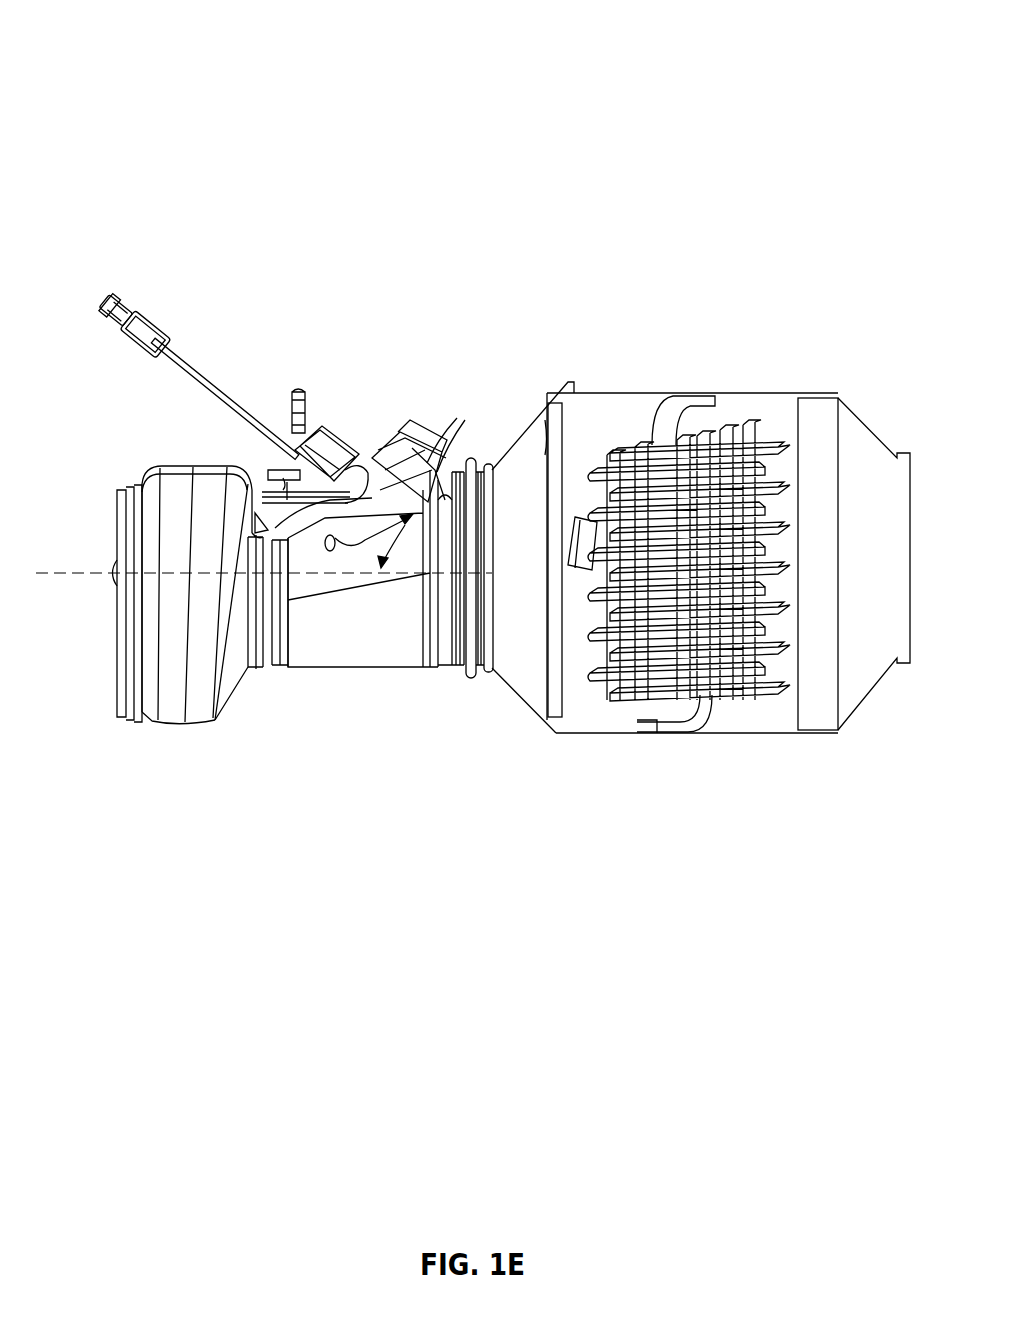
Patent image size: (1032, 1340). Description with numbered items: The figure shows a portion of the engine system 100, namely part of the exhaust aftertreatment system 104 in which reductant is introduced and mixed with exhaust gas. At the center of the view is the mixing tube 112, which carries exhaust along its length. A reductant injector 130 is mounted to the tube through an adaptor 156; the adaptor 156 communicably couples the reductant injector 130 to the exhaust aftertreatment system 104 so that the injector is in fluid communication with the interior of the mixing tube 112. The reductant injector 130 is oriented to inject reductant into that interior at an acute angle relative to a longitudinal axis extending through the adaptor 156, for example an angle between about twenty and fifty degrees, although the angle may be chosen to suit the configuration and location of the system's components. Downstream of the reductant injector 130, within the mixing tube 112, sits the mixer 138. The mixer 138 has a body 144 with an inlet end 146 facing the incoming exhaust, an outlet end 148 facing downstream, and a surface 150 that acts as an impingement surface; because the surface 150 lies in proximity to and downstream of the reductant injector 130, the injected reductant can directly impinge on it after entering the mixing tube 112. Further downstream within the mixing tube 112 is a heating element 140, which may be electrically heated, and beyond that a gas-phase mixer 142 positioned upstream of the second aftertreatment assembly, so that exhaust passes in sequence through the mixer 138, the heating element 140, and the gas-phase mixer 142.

The engine system 100 is at (730, 73).
The exhaust aftertreatment system 104 is at (697, 292).
The mixing tube 112 is at (715, 733).
The reductant injector 130 is at (347, 420).
The mixer 138 is at (694, 393).
The heating element 140 is at (545, 420).
The gas-phase mixer 142 is at (838, 395).
The body 144 is at (632, 733).
The inlet end 146 is at (607, 415).
The outlet end 148 is at (735, 712).
The surface 150 is at (607, 668).
The adaptor 156 is at (325, 668).